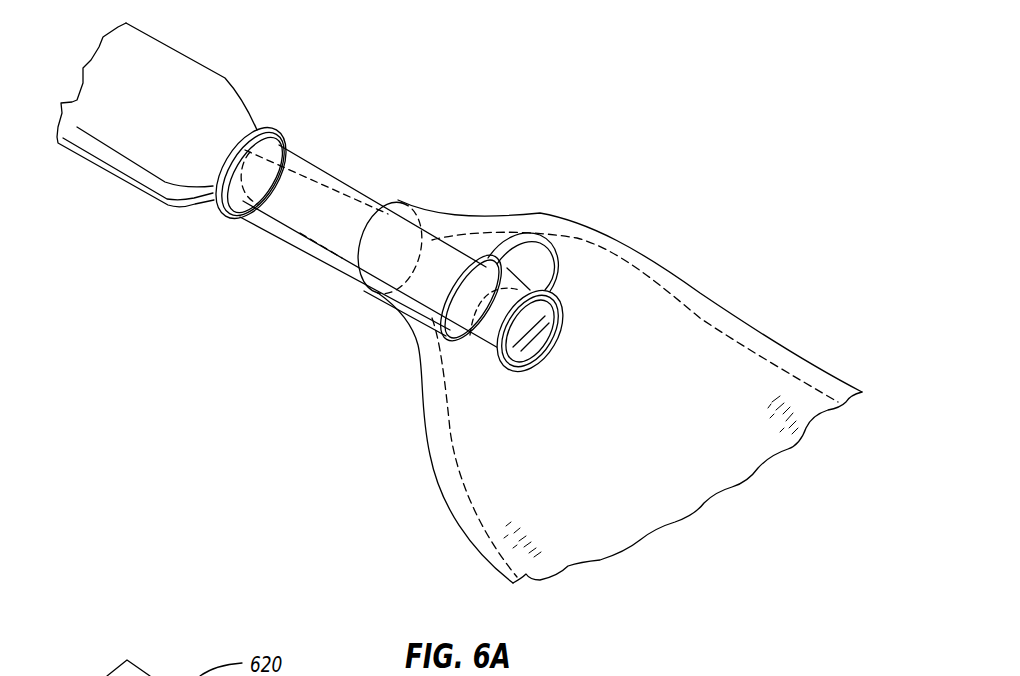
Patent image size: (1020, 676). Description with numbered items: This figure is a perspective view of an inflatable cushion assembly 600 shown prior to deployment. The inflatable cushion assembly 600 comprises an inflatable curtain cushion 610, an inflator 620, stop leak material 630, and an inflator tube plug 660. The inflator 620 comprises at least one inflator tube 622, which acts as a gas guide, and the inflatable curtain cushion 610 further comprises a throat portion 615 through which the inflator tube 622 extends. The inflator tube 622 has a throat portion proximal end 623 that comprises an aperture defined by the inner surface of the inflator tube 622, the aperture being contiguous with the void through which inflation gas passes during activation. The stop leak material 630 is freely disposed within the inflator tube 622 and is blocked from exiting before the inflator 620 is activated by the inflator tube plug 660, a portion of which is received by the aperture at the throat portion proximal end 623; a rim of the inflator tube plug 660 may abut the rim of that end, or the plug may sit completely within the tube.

The inflatable cushion assembly 600 is at (567, 130).
The inflatable curtain cushion 610 is at (643, 448).
The throat portion 615 is at (507, 457).
The inflator 620 is at (175, 67).
The inflator tube 622 is at (433, 250).
The throat portion proximal end 623 is at (493, 322).
The stop leak material 630 is at (313, 177).
The inflator tube plug 660 is at (500, 348).